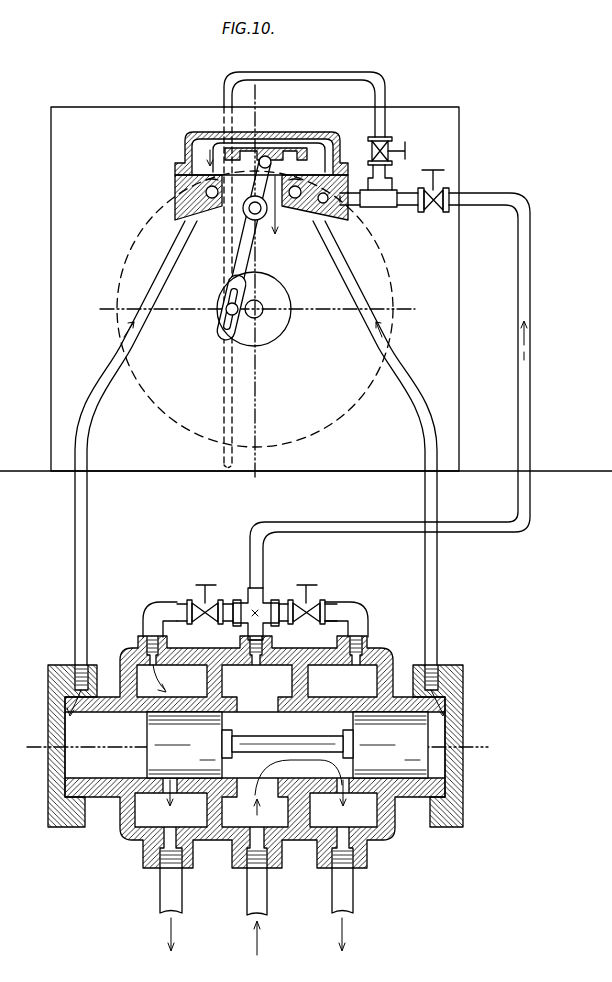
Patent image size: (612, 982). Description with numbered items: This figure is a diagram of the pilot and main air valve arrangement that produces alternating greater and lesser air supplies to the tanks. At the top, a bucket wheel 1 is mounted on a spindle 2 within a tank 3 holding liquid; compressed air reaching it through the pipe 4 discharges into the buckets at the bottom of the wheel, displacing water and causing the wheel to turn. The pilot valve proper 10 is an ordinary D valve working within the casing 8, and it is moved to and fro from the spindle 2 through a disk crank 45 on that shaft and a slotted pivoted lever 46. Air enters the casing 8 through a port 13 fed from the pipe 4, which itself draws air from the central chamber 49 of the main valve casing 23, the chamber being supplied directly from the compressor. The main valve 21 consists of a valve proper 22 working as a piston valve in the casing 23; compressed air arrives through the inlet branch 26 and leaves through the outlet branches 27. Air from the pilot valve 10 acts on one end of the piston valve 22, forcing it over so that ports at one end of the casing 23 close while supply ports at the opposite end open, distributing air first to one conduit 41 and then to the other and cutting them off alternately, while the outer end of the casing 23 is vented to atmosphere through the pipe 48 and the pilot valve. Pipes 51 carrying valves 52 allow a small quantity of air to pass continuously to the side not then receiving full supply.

The bucket wheel 1 is at (140, 240).
The spindle 2 is at (262, 305).
The tank 3 is at (56, 126).
The pipe 4 is at (304, 77).
The casing 8 is at (175, 190).
The valve proper 10 is at (268, 149).
The port 13 is at (346, 216).
The valve 21 is at (255, 745).
The valve proper 22 is at (287, 745).
The casing 23 is at (128, 648).
The inlet branch 26 is at (244, 866).
The outlet branch 27 is at (378, 868).
The conduit 41 is at (160, 893).
The disk crank 45 is at (278, 321).
The slotted pivoted lever 46 is at (246, 257).
The pipe 48 is at (90, 433).
The central chamber 49 is at (252, 681).
The pipe 51 is at (152, 606).
The valve 52 is at (205, 607).